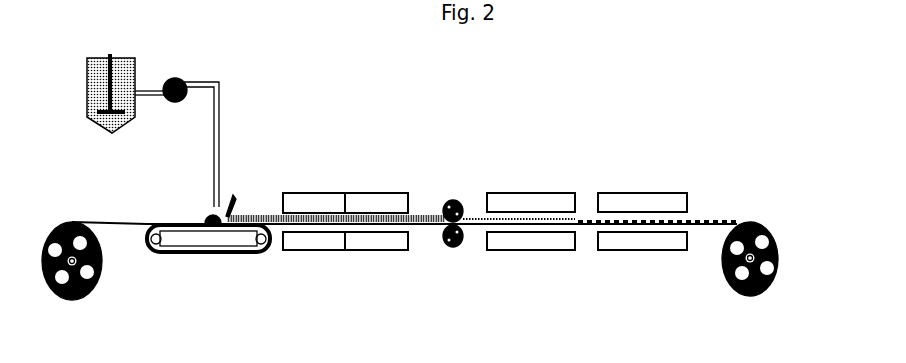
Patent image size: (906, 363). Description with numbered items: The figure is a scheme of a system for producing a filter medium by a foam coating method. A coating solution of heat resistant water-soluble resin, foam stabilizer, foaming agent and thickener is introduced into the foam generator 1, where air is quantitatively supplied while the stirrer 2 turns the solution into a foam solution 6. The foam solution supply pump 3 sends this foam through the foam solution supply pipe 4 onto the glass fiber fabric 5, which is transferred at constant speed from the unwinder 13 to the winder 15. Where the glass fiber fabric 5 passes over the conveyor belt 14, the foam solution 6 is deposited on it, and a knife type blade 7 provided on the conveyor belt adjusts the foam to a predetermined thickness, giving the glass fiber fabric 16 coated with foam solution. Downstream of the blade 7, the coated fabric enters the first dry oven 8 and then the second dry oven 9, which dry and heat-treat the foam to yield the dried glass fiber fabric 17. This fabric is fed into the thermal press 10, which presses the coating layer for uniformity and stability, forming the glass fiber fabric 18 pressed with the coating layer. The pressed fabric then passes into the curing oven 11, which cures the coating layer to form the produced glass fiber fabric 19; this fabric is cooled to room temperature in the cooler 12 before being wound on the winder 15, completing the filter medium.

The foam generator 1 is at (105, 117).
The stirrer 2 is at (112, 88).
The foam solution supply pump 3 is at (190, 83).
The foam solution supply pipe 4 is at (222, 115).
The glass fiber fabric 5 is at (118, 223).
The foam solution 6 is at (203, 210).
The blade 7 is at (238, 203).
The first dry oven 8 is at (318, 193).
The second dry oven 9 is at (363, 193).
The thermal press 10 is at (448, 200).
The curing oven 11 is at (525, 192).
The cooler 12 is at (637, 192).
The unwinder 13 is at (92, 283).
The conveyor belt 14 is at (202, 252).
The winder 15 is at (725, 265).
The glass fiber fabric coated with foam solution 16 is at (263, 218).
The dried glass fiber fabric 17 is at (410, 217).
The glass fiber fabric pressed with coating layer 18 is at (475, 215).
The produced glass fiber fabric 19 is at (578, 222).